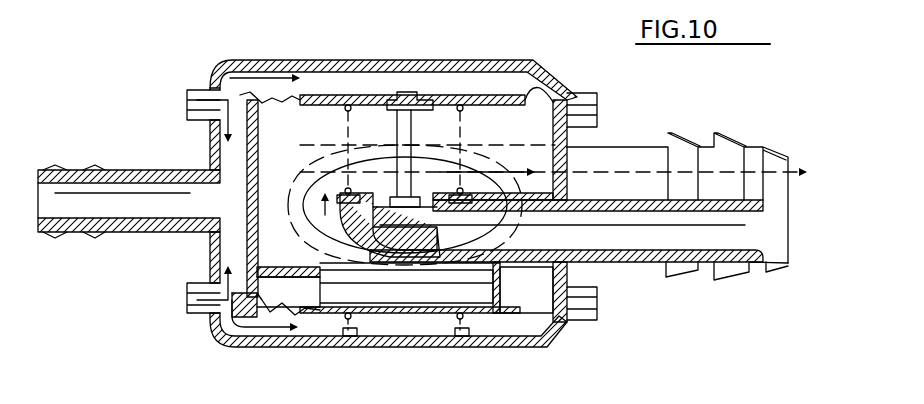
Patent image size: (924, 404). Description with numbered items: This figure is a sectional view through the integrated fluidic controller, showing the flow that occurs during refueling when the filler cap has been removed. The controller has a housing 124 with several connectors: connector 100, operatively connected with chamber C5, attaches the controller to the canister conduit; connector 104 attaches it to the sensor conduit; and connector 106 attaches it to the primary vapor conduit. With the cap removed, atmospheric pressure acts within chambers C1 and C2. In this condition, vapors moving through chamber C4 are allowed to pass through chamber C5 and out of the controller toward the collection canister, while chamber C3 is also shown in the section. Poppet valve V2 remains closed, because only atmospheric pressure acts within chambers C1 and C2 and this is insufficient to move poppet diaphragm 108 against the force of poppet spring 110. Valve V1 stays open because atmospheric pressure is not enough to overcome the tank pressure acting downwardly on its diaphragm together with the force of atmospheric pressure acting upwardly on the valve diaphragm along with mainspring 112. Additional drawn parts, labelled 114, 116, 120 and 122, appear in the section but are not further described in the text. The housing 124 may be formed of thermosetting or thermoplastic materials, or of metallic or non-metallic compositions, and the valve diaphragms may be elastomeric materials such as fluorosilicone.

The connector 100 is at (719, 133).
The connector 104 is at (65, 170).
The connector 106 is at (655, 262).
The poppet diaphragm 108 is at (325, 95).
The poppet spring 110 is at (466, 103).
The mainspring 112 is at (460, 338).
The upper diaphragm rivets 114 is at (400, 127).
The lower chamber wall 116 is at (296, 268).
The lower valve plate 120 is at (372, 347).
The cover 122 is at (296, 60).
The housing 124 is at (210, 138).
The chamber C1 is at (413, 330).
The chamber C2 is at (410, 77).
The chamber C3 is at (619, 240).
The chamber C4 is at (540, 295).
The chamber C5 is at (548, 84).
The valve V1 is at (300, 347).
The poppet valve V2 is at (440, 205).